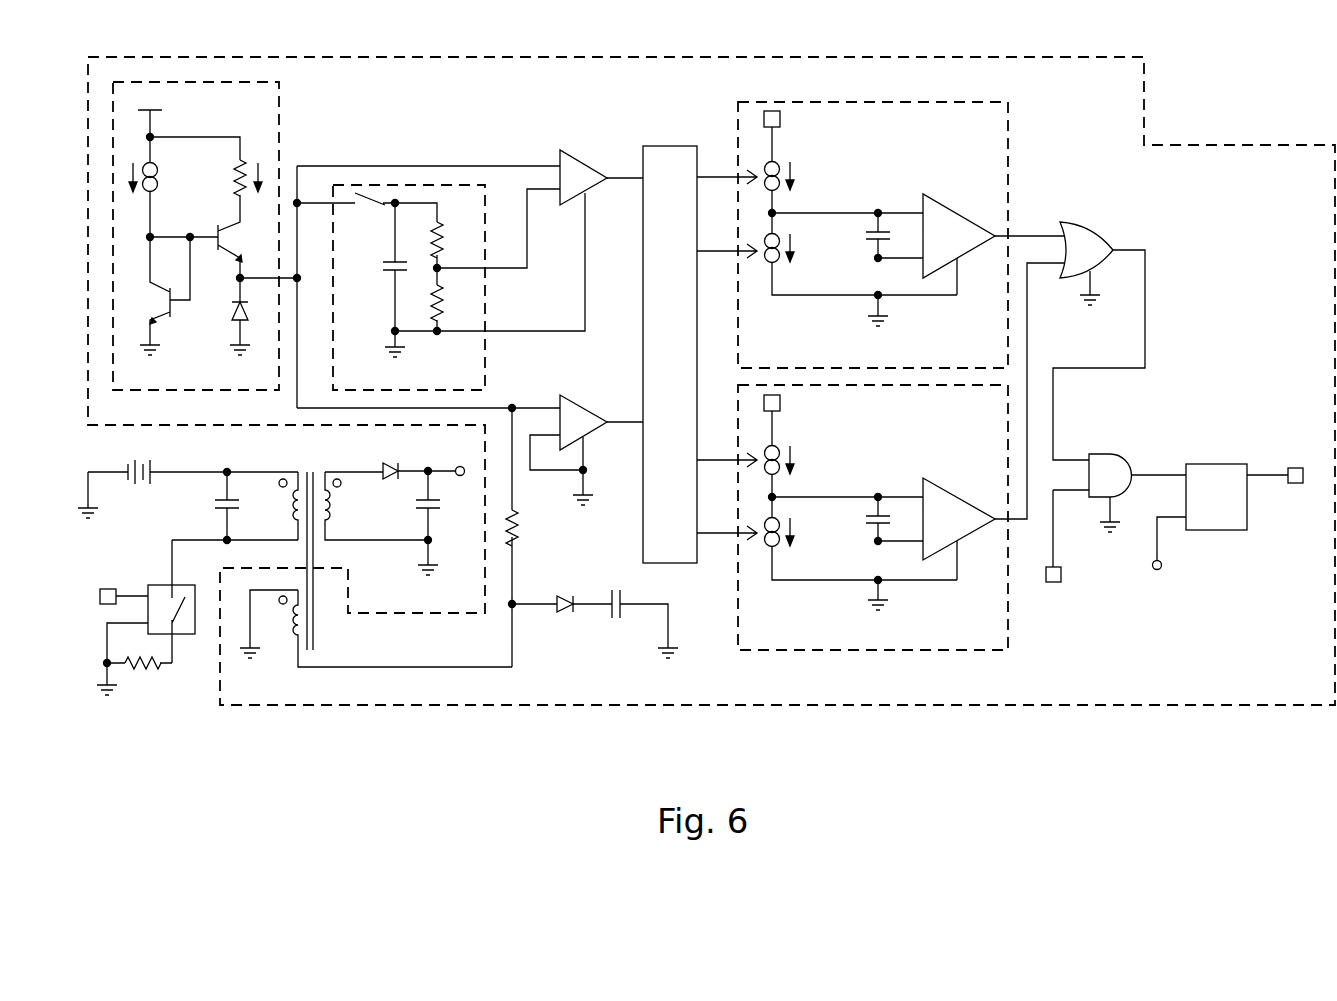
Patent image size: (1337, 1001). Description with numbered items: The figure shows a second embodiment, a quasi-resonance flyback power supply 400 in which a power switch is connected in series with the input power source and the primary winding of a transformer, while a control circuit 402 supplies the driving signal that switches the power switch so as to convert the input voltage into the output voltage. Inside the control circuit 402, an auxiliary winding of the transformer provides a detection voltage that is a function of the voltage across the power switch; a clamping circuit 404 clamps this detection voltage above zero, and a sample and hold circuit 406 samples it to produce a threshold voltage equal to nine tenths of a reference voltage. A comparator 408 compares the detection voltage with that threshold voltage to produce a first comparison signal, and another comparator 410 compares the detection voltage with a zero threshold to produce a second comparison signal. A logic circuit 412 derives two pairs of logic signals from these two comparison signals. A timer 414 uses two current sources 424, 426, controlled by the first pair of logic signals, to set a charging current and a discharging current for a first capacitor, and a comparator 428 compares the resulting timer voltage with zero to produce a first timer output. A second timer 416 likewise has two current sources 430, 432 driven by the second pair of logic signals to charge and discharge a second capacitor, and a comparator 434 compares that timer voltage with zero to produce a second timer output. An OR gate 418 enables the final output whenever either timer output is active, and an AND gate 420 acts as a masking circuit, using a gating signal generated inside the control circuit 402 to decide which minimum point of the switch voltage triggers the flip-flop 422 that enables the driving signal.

The quasi-resonance flyback power supply 400 is at (1232, 110).
The control circuit 402 is at (1028, 705).
The clamping circuit 404 is at (279, 146).
The sample and hold circuit 406 is at (397, 185).
The comparator 408 is at (580, 158).
The comparator 410 is at (578, 400).
The logic circuit 412 is at (668, 146).
The timer 414 is at (923, 235).
The timer 416 is at (935, 526).
The OR gate 418 is at (1090, 226).
The AND gate 420 is at (1106, 454).
The flip-flop 422 is at (1215, 464).
The current source 424 is at (798, 156).
The current source 426 is at (763, 275).
The comparator 428 is at (950, 210).
The current source 430 is at (798, 442).
The current source 432 is at (762, 560).
The comparator 434 is at (950, 496).